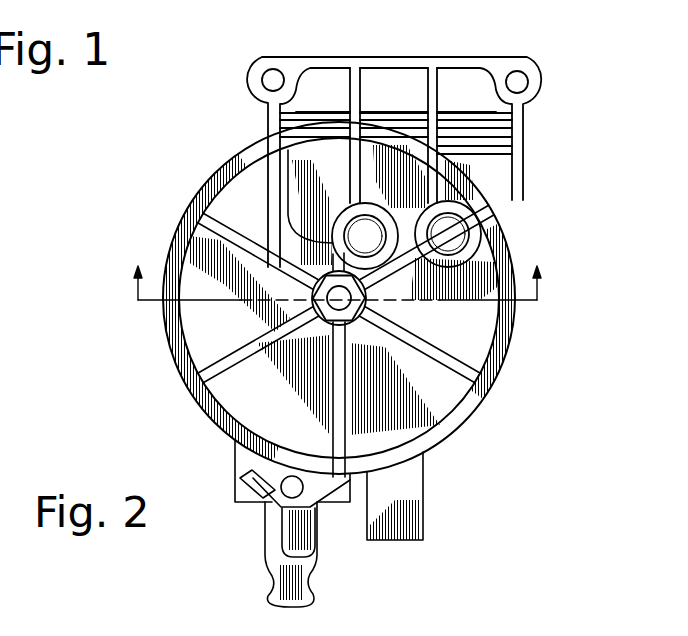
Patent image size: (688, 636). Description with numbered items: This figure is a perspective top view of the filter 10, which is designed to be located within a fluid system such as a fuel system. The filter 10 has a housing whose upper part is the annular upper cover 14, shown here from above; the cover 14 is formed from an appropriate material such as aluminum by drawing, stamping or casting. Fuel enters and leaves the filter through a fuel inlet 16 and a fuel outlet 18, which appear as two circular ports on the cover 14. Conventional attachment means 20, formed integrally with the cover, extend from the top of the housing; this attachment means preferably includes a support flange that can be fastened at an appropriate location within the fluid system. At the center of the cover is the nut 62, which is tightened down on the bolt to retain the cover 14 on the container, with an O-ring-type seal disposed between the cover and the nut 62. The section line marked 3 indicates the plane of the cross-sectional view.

The filter 10 is at (122, 384).
The annular upper cover 14 is at (222, 408).
The fuel inlet 16 is at (460, 240).
The fuel outlet 18 is at (360, 237).
The attachment means 20 is at (294, 60).
The nut 62 is at (356, 322).
The section line 3- 3 is at (339, 283).